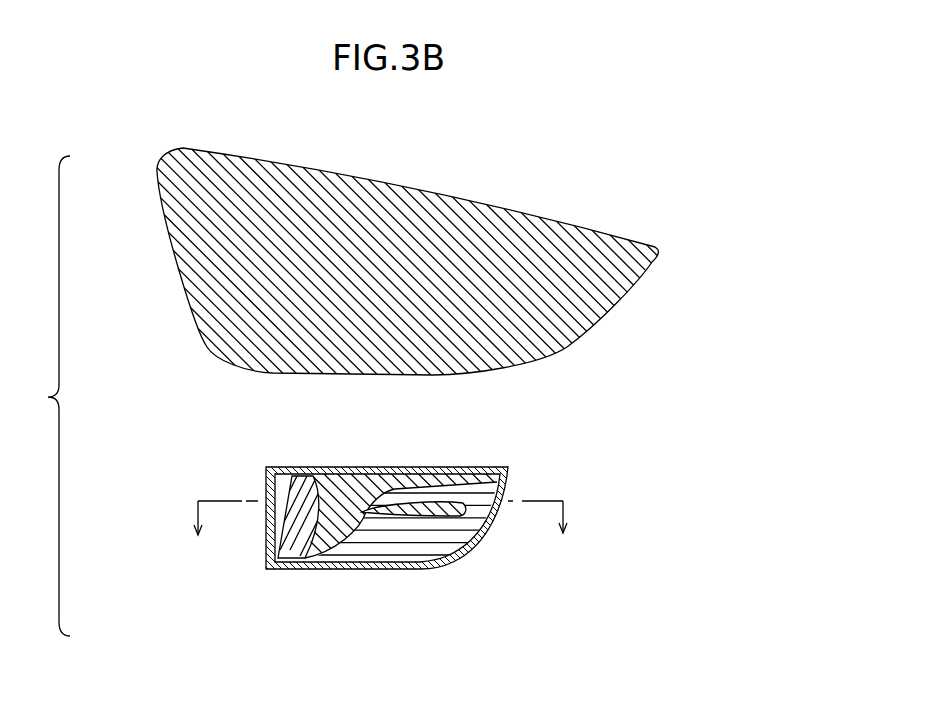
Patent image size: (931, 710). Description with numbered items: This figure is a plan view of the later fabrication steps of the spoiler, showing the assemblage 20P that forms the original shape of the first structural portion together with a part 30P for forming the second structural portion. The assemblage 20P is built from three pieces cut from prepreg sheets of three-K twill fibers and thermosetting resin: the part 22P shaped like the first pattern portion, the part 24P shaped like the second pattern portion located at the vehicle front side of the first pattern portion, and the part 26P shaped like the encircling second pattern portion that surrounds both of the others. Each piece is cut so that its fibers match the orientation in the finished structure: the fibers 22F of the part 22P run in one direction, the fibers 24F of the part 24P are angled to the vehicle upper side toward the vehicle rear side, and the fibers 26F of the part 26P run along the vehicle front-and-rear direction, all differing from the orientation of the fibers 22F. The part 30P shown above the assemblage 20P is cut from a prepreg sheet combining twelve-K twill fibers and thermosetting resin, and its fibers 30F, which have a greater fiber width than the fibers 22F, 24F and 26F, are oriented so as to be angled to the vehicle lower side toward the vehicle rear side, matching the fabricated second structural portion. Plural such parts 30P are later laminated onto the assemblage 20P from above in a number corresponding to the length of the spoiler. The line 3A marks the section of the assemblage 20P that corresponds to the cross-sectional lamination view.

The fibers 30F is at (557, 228).
The parts 30P is at (462, 258).
The assemblage 20P is at (389, 537).
The part 22P is at (389, 519).
The fibers 22F is at (308, 554).
The part 24P is at (259, 496).
The fibers 24F is at (282, 473).
The part 26P is at (439, 576).
The fibers 26F is at (453, 552).
The section line 3A is at (197, 506).